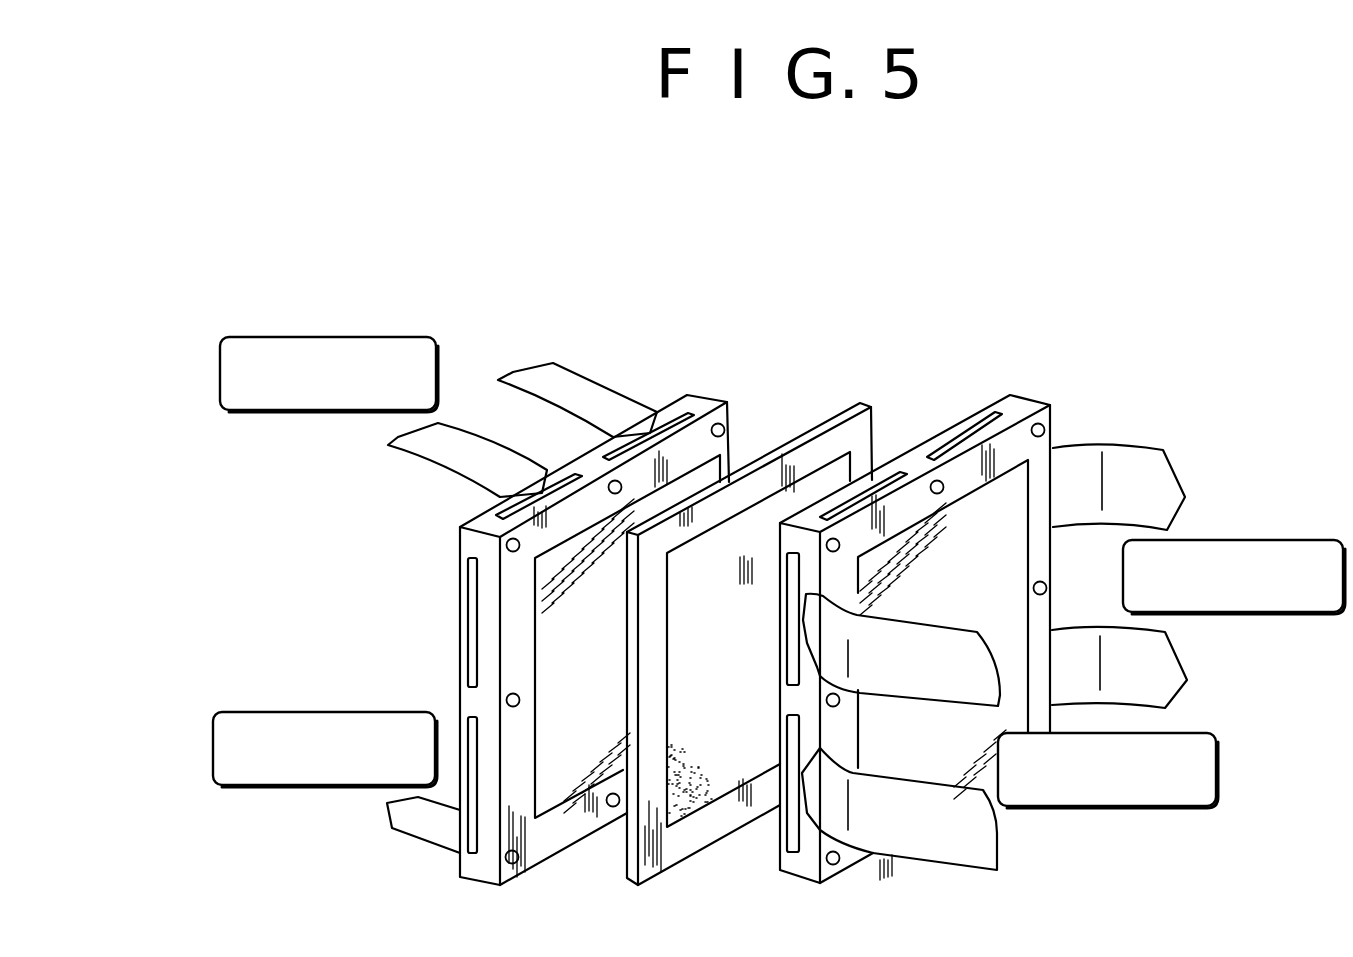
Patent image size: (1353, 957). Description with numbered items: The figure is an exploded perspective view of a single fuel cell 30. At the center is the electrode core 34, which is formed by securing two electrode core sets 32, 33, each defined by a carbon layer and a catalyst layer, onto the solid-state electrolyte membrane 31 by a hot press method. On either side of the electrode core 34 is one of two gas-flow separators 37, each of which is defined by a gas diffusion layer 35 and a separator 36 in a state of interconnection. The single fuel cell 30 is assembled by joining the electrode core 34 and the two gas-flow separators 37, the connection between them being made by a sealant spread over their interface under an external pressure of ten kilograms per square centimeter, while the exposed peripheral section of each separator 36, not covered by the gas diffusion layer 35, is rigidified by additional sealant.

The single fuel cell 30 is at (603, 333).
The solid-state electrolyte membrane 31 is at (856, 405).
The electrode core set 32 is at (780, 436).
The electrode core set 33 is at (842, 470).
The electrode core 34 is at (737, 320).
The gas diffusion layer 35 is at (572, 620).
The separator 36 is at (482, 652).
The gas-flow separator 37 is at (333, 530).